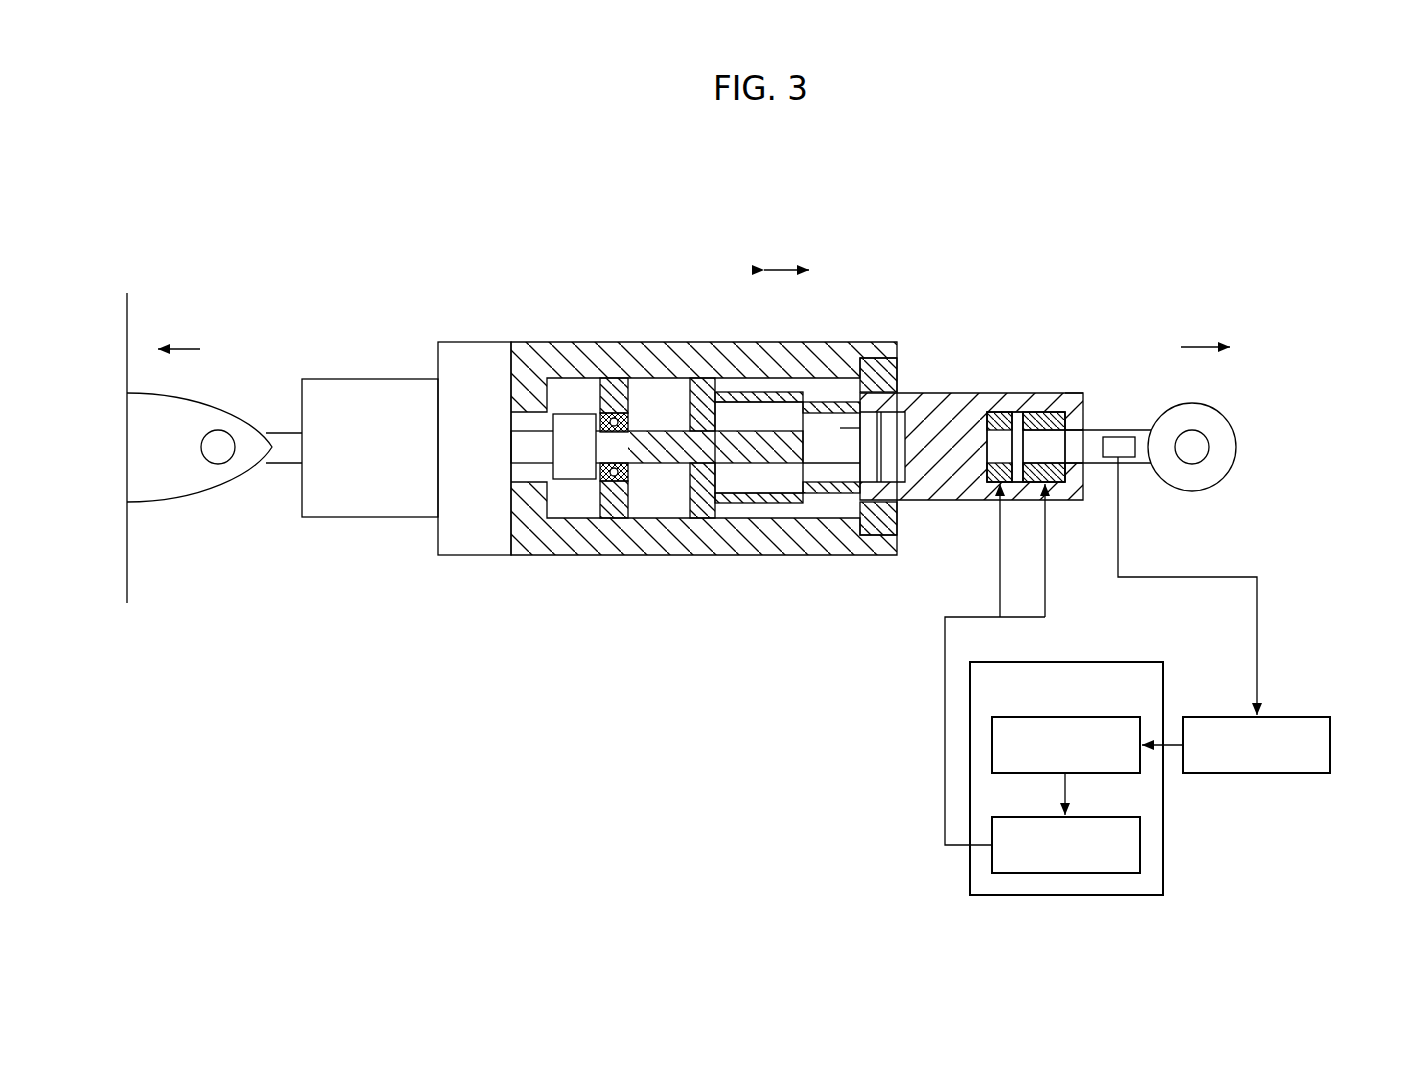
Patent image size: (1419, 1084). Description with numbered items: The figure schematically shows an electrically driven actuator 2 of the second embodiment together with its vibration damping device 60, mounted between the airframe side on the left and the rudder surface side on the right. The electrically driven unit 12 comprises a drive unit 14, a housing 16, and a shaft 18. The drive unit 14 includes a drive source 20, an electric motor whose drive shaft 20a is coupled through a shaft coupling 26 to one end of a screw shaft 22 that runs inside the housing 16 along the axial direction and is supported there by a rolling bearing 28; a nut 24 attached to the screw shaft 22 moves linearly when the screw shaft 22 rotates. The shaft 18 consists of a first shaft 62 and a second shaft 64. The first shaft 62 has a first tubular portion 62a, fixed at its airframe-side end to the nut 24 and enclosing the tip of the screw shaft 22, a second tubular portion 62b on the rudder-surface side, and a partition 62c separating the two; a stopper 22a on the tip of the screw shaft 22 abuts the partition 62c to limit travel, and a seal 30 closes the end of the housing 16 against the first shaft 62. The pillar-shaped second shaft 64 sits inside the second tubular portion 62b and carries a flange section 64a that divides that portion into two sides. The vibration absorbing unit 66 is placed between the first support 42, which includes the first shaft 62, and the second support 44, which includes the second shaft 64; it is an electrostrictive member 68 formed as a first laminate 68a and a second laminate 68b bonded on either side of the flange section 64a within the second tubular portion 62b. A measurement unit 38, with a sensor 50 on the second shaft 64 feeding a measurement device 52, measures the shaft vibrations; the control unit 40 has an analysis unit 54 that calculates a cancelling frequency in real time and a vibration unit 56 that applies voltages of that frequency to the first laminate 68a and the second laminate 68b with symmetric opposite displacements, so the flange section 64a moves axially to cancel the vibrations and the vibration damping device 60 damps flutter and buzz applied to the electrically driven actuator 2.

The electrically driven actuator 2 is at (752, 531).
The electrically driven unit 12 is at (599, 456).
The drive unit 14 is at (599, 477).
The housing 16 is at (695, 357).
The shaft 18 is at (975, 379).
The drive source 20 is at (403, 507).
The drive shaft 20a is at (533, 440).
The screw shaft 22 is at (668, 465).
The stopper 22a is at (850, 472).
The nut 24 is at (700, 492).
The shaft coupling 26 is at (575, 425).
The rolling bearing 28 is at (608, 380).
The seal 30 is at (884, 537).
The measurement unit 38 is at (1240, 605).
The control unit 40 is at (1066, 759).
The first support 42 is at (899, 437).
The second support 44 is at (1091, 415).
The sensor 50 is at (1125, 458).
The measurement device 52 is at (1297, 715).
The analysis unit 54 is at (1108, 717).
The vibration unit 56 is at (1090, 817).
The vibration damping device 60 is at (1173, 686).
The first shaft 62 is at (899, 437).
The first tubular portion 62a is at (826, 400).
The second tubular portion 62b is at (1065, 395).
The partition 62c is at (930, 467).
The second shaft 64 is at (1091, 415).
The flange section 64a is at (987, 481).
The vibration absorbing unit 66 is at (996, 374).
The electrostrictive member 68 is at (996, 374).
The first laminate 68a is at (990, 412).
The second laminate 68b is at (1040, 412).